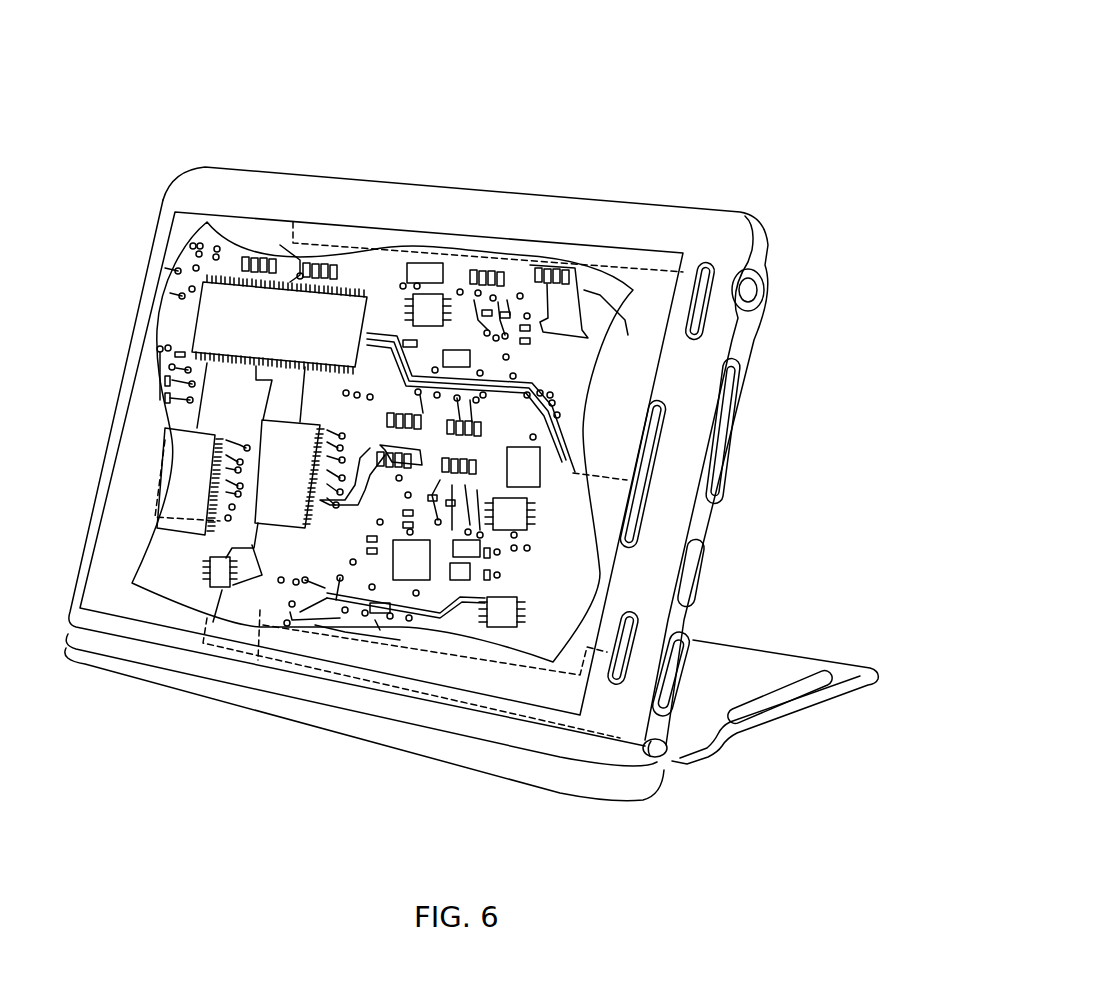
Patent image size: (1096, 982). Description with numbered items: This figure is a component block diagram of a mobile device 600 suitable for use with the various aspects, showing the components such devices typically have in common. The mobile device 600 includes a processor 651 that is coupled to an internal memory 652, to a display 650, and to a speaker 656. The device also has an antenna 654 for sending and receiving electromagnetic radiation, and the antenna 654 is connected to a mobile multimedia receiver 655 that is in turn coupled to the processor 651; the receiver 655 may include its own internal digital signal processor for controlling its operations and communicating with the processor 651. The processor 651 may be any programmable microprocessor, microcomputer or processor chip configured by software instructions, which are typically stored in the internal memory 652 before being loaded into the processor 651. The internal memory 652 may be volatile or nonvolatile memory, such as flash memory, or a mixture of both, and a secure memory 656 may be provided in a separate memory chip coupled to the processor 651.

The mobile device 600 is at (711, 74).
The display 650 is at (702, 213).
The processor 651 is at (288, 331).
The internal memory 652 is at (212, 453).
The antenna 654 is at (666, 759).
The mobile multimedia receiver 655 is at (312, 466).
The speaker 656 is at (218, 580).